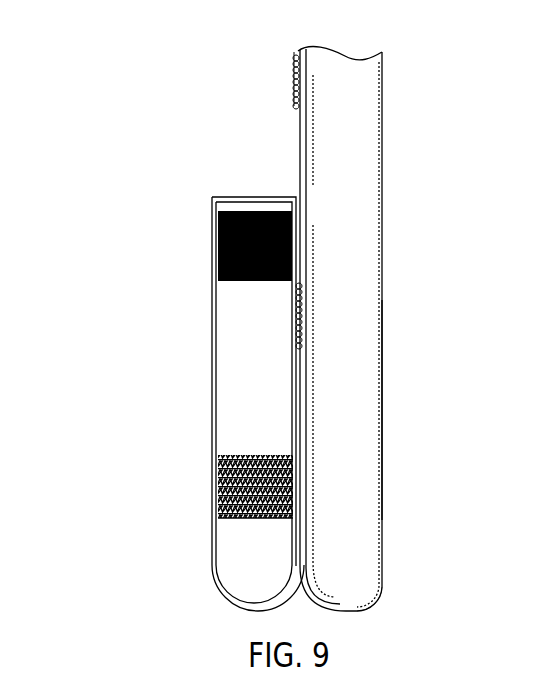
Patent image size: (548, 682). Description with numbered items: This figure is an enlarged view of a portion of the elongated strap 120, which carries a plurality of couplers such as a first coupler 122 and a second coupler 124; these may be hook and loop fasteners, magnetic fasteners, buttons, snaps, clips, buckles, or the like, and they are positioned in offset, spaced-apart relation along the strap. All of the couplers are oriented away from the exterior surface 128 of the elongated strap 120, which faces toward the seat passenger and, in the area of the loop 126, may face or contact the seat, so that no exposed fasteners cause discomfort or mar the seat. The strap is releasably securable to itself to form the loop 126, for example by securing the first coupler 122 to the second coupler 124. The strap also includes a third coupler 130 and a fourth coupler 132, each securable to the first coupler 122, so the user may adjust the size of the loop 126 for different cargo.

The elongated strap 120 is at (117, 27).
The first coupler 122 is at (219, 246).
The second coupler 124 is at (293, 92).
The loop 126 is at (378, 597).
The exterior surface 128 is at (360, 428).
The third coupler 130 is at (297, 322).
The fourth coupler 132 is at (216, 487).